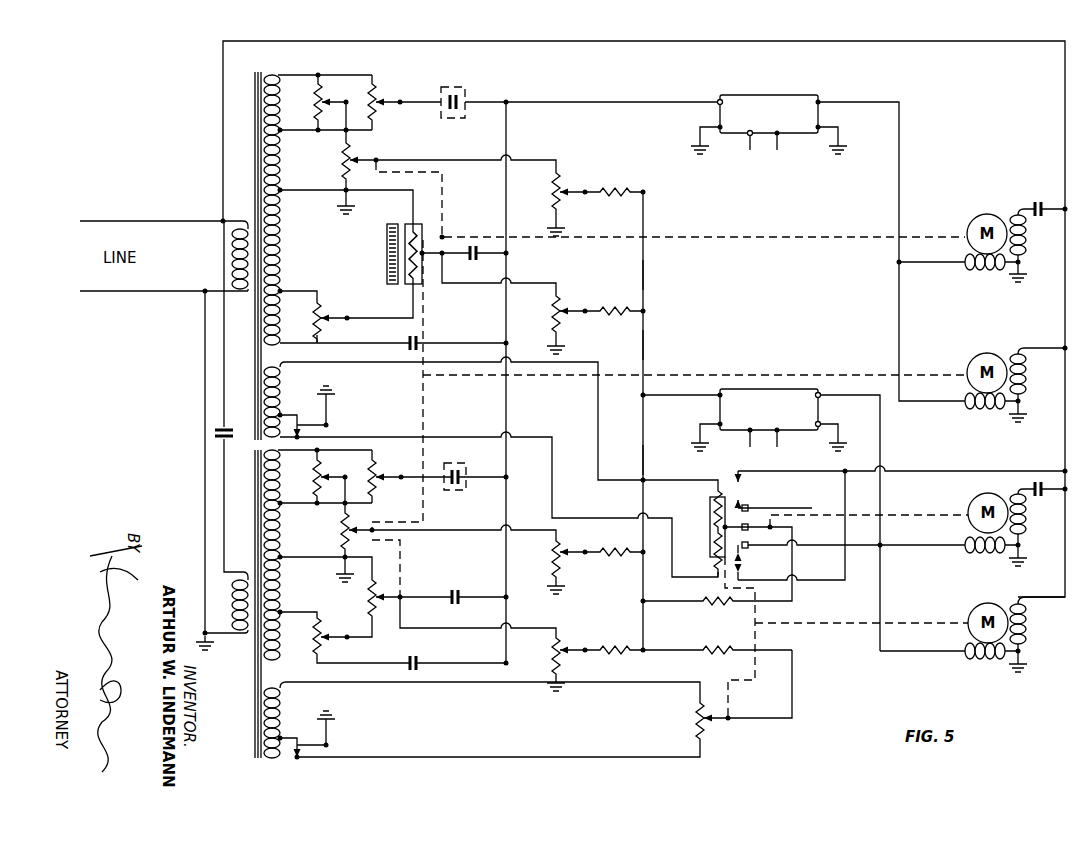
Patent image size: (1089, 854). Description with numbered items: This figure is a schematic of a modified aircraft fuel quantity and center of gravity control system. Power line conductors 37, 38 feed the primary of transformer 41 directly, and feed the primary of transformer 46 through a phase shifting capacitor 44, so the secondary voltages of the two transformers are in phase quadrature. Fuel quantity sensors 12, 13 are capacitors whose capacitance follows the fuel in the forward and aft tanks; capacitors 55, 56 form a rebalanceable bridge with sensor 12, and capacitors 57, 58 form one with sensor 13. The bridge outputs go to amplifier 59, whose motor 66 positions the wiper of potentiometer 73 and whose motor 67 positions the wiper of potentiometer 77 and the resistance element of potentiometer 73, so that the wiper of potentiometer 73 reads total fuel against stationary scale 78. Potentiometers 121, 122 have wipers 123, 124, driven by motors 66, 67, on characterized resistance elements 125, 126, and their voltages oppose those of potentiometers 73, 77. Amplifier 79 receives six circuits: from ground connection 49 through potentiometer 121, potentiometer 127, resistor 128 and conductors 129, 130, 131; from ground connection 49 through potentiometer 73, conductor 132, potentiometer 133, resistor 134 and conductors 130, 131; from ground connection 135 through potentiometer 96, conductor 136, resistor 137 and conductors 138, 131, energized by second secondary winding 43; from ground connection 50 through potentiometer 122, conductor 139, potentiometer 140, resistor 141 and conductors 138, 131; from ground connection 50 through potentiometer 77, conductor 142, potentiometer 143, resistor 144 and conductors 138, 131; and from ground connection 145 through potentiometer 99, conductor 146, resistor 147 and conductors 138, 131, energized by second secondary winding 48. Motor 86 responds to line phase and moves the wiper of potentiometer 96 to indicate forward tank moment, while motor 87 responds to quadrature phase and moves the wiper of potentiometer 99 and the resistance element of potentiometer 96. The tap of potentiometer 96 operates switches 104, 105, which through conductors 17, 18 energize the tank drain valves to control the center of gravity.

The fuel quantity sensor 12 is at (464, 82).
The fuel quantity sensor 13 is at (468, 461).
The electrical conductor 17 is at (810, 508).
The electrical conductor 18 is at (808, 546).
The power line conductor 37 is at (138, 221).
The power line conductor 38 is at (144, 291).
The transformer 41 is at (248, 94).
The second secondary winding 43 is at (282, 369).
The phase shifting capacitor 44 is at (215, 432).
The transformer 46 is at (250, 494).
The second secondary winding 48 is at (282, 703).
The ground connection 49 is at (344, 192).
The ground connection 50 is at (343, 558).
The capacitor 55 is at (476, 260).
The capacitor 56 is at (422, 343).
The capacitor 57 is at (459, 587).
The capacitor 58 is at (416, 660).
The amplifier 59 is at (758, 95).
The motor 66 is at (969, 214).
The motor 67 is at (969, 356).
The potentiometer 73 is at (430, 240).
The potentiometer 77 is at (374, 584).
The stationary scale 78 is at (385, 258).
The amplifier 79 is at (801, 430).
The motor 86 is at (966, 504).
The motor 87 is at (966, 608).
The potentiometer 96 is at (708, 528).
The potentiometer 99 is at (696, 710).
The switch 104 is at (745, 563).
The switch 105 is at (745, 488).
The characterized potentiometer 121 is at (360, 156).
The characterized potentiometer 122 is at (356, 525).
The potentiometer wiper 123 is at (375, 163).
The potentiometer wiper 124 is at (372, 532).
The characterized potentiometer resistance element 125 is at (345, 166).
The characterized potentiometer resistance element 126 is at (342, 534).
The potentiometer 127 is at (578, 180).
The resistor 128 is at (607, 195).
The conductor 129 is at (644, 273).
The conductor 130 is at (644, 343).
The conductor 131 is at (644, 396).
The conductor 132 is at (446, 284).
The potentiometer 133 is at (574, 298).
The resistor 134 is at (613, 314).
The ground connection 135 is at (327, 425).
The conductor 136 is at (792, 563).
The resistor 137 is at (695, 600).
The conductor 138 is at (643, 460).
The conductor 139 is at (432, 528).
The potentiometer 140 is at (572, 543).
The resistor 141 is at (613, 560).
The conductor 142 is at (440, 626).
The potentiometer 143 is at (572, 636).
The resistor 144 is at (613, 655).
The ground connection 145 is at (326, 745).
The conductor 146 is at (792, 684).
The resistor 147 is at (698, 648).